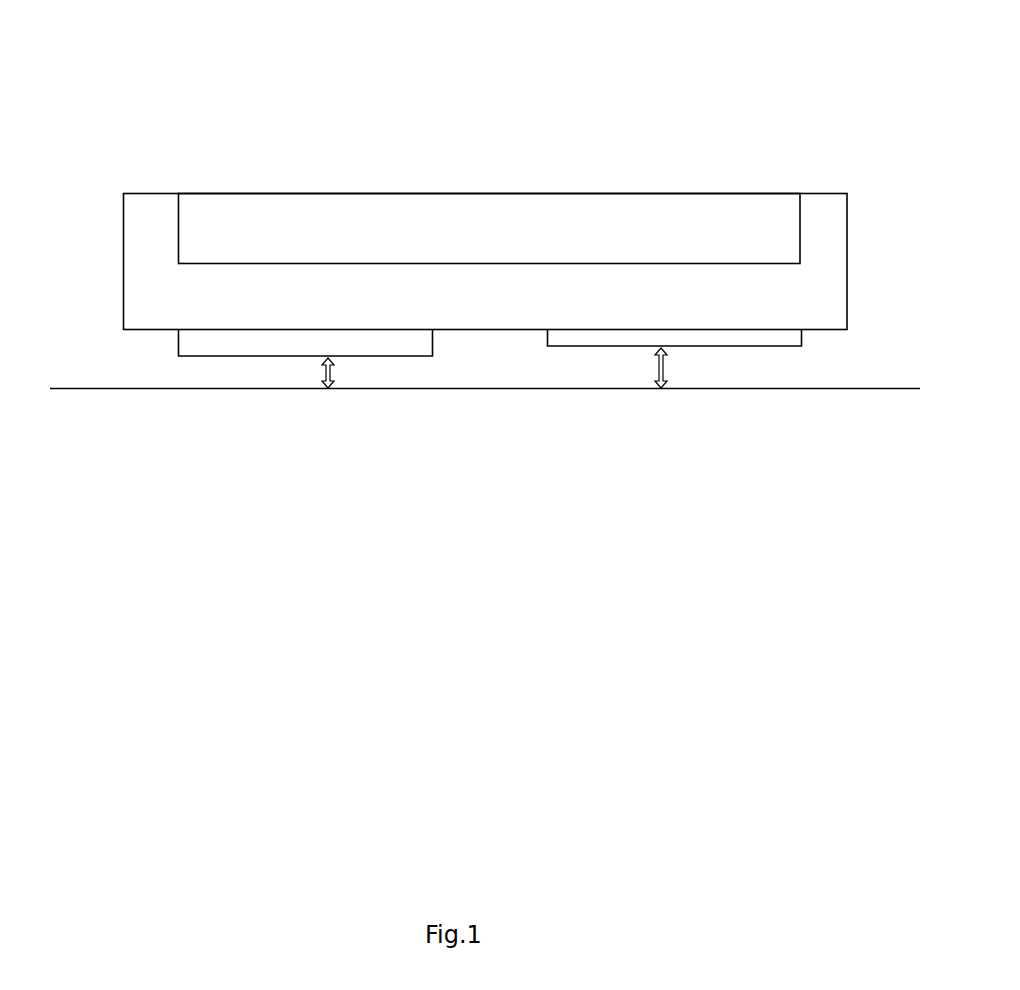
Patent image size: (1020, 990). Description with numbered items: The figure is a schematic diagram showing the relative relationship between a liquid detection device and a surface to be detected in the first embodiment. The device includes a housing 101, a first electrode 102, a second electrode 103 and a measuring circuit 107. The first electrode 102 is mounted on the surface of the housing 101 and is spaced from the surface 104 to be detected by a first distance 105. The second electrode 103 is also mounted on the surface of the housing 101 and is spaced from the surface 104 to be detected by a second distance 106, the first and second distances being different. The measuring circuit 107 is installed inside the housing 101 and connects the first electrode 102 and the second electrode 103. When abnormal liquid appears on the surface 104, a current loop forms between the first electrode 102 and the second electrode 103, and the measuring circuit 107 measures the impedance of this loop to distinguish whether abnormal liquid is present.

The housing 101 is at (838, 208).
The first electrode 102 is at (213, 343).
The second electrode 103 is at (777, 338).
The surface to be detected 104 is at (123, 389).
The first distance 105 is at (333, 372).
The second distance 106 is at (665, 368).
The measuring circuit 107 is at (407, 207).